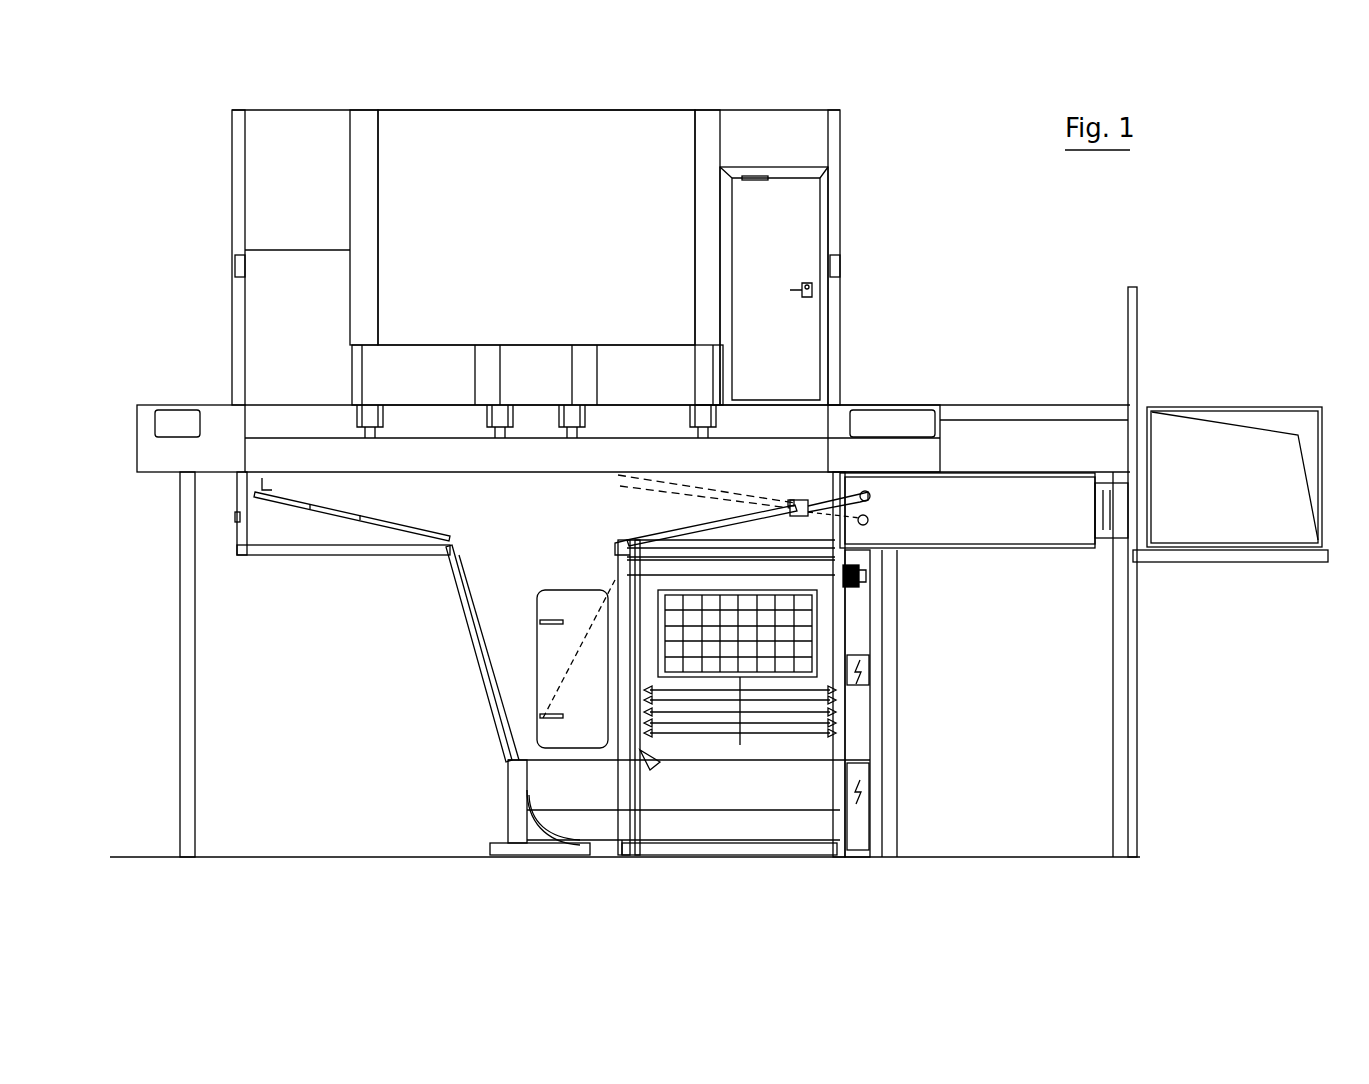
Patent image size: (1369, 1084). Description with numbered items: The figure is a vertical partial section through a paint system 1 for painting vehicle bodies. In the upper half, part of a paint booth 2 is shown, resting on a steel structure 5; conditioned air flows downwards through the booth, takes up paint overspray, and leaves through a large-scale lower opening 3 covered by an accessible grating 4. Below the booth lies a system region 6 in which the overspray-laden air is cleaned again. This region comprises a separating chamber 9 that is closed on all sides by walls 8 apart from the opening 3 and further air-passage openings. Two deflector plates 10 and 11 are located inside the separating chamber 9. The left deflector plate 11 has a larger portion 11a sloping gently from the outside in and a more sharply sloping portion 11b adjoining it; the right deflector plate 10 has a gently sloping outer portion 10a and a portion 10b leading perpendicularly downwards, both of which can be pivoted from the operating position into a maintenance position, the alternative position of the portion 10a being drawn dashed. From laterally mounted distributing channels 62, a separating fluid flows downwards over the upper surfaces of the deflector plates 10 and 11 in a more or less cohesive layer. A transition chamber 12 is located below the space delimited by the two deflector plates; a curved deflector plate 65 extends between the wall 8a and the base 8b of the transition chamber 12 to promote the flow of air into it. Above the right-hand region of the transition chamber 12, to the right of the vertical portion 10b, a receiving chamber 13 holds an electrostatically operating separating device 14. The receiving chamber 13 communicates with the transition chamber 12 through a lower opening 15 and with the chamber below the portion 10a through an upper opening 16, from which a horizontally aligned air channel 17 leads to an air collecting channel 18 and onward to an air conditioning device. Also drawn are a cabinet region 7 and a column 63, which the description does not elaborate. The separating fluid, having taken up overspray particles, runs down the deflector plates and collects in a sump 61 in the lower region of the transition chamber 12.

The paint system 1 is at (140, 208).
The paint booth 2 is at (556, 228).
The lower opening 3 is at (262, 410).
The grating 4 is at (300, 405).
The steel structure 5 is at (190, 677).
The system region 6 is at (270, 722).
The cabinet 7 is at (1034, 678).
The walls 8 is at (240, 530).
The wall 8a is at (515, 812).
The base 8b is at (725, 848).
The separating chamber 9 is at (514, 536).
The deflector plate 10 is at (733, 505).
The outer portion of deflector plate 10a is at (722, 505).
The portion of deflector plate 10b is at (600, 655).
The deflector plate 11 is at (405, 560).
The larger portion of deflector plate 11a is at (385, 500).
The more sharply sloping portion 11b is at (480, 662).
The transition chamber 12 is at (706, 799).
The receiving chamber 13 is at (820, 630).
The electrostatically operating separating device 14 is at (744, 640).
The lower opening 15 is at (855, 810).
The upper opening 16 is at (860, 585).
The air channel 17 is at (978, 532).
The air collecting channel 18 is at (1218, 512).
The sump 61 is at (778, 815).
The distributing channels 62 is at (790, 500).
The sensor column 63 is at (855, 650).
The deflector plate 65 is at (536, 828).